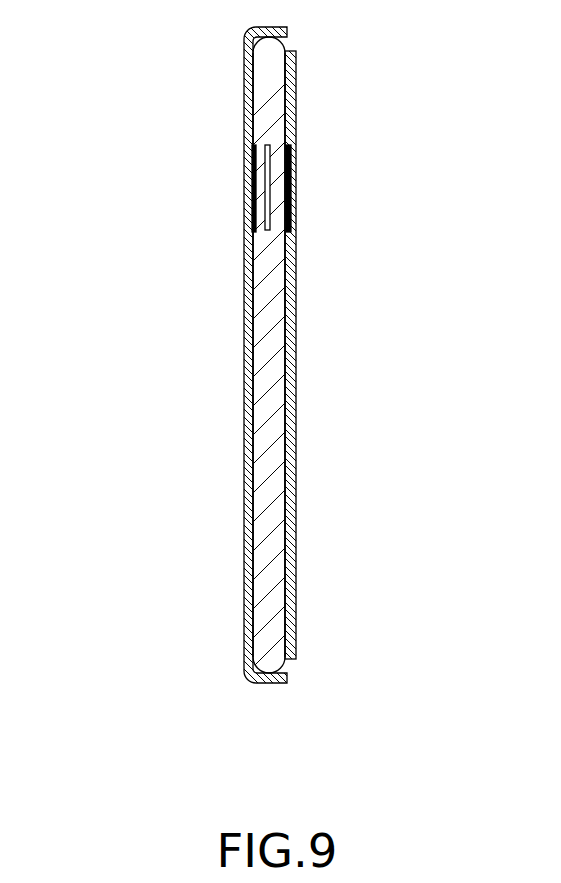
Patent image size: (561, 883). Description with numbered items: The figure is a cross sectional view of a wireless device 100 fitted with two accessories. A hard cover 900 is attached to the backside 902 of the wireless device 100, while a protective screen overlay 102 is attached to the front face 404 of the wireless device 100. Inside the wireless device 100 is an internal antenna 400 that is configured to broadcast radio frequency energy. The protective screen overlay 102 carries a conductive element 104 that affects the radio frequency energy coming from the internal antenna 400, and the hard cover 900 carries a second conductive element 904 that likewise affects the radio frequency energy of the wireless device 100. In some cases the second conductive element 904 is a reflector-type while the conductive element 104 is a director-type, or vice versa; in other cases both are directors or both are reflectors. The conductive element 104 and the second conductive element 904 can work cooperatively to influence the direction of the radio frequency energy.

The wireless device 100 is at (257, 358).
The protective screen overlay 102 is at (318, 113).
The conductive element 104 is at (295, 207).
The internal antenna 400 is at (268, 230).
The front face 404 is at (290, 402).
The hard cover 900 is at (247, 313).
The backside 902 is at (251, 414).
The second conductive element 904 is at (247, 210).